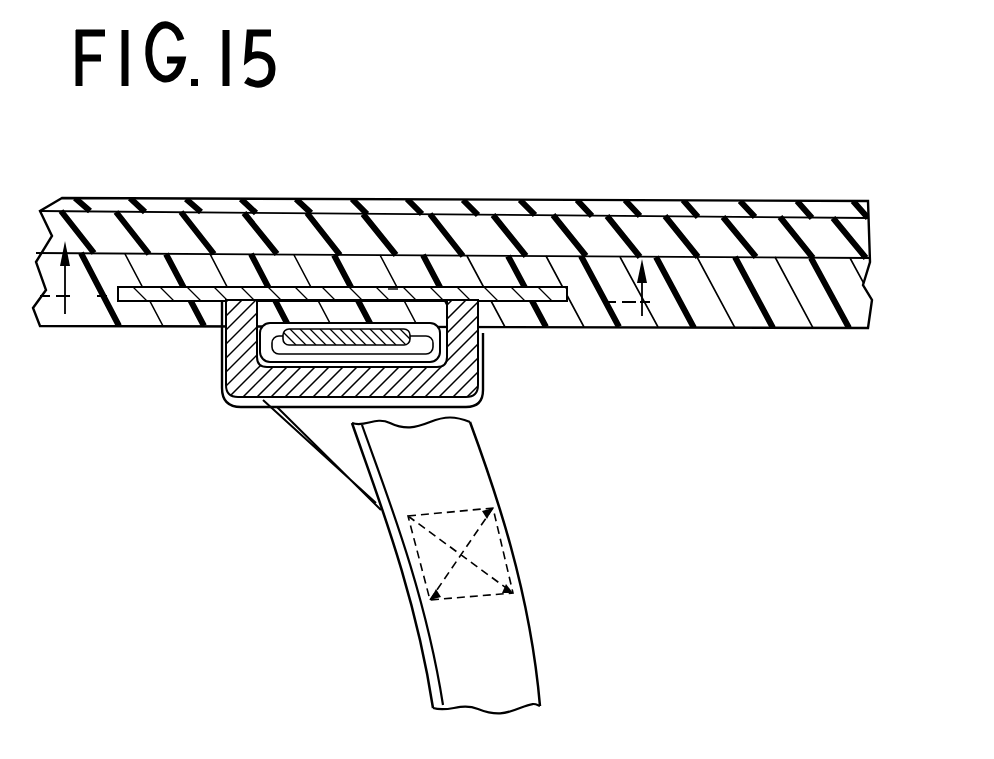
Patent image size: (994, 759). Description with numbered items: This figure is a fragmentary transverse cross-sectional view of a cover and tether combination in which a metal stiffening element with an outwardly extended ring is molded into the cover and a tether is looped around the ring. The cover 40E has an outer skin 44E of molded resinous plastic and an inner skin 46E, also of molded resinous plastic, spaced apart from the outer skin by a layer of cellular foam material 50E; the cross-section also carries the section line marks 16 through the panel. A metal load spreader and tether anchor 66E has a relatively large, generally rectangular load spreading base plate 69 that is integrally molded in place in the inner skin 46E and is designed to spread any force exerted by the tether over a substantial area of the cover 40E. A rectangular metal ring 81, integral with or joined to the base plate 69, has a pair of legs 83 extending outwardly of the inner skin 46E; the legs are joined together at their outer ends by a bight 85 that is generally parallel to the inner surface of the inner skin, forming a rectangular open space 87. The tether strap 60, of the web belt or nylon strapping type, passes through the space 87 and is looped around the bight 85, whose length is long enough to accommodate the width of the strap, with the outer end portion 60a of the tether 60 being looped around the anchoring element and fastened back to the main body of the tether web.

The cover 40E is at (746, 359).
The outer skin 44E is at (270, 185).
The layer of cellular foam material 50E is at (753, 243).
The inner skin 46E is at (152, 328).
The section line 16 is at (656, 317).
The metal load spreader and tether anchor 66E is at (476, 333).
The legs 83 is at (222, 350).
The bight 85 is at (310, 382).
The rectangular open space 87 is at (318, 330).
The load spreading base plate 69 is at (395, 293).
The rectangular metal ring 81 is at (255, 398).
The tether strap 60 is at (488, 663).
The outer end portion 60a is at (412, 620).